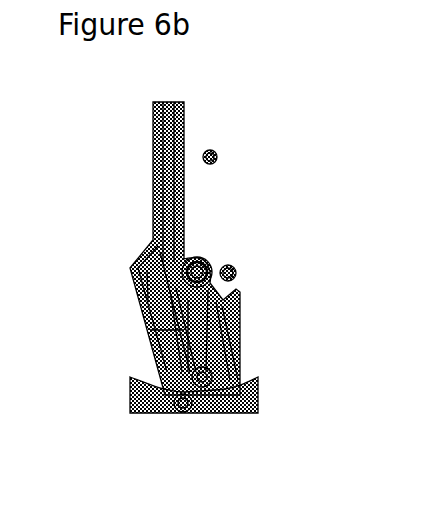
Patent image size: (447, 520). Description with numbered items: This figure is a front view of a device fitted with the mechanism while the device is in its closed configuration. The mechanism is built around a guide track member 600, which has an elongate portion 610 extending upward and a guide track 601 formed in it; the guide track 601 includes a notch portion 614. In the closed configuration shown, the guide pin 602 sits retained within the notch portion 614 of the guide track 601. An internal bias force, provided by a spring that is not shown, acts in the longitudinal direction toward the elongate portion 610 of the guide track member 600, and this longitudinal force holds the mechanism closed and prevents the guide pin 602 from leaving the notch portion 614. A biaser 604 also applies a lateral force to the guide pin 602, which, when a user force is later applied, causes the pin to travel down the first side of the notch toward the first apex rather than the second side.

The guide track member 600 is at (153, 137).
The guide track 601 is at (167, 234).
The guide pin 602 is at (202, 380).
The biaser 604 is at (187, 320).
The elongate portion 610 is at (173, 143).
The notch portion 614 is at (225, 362).